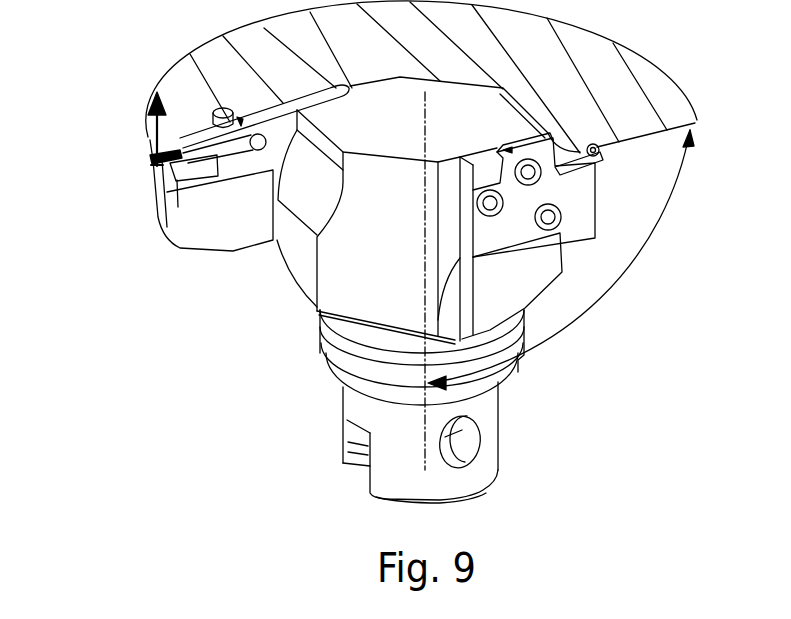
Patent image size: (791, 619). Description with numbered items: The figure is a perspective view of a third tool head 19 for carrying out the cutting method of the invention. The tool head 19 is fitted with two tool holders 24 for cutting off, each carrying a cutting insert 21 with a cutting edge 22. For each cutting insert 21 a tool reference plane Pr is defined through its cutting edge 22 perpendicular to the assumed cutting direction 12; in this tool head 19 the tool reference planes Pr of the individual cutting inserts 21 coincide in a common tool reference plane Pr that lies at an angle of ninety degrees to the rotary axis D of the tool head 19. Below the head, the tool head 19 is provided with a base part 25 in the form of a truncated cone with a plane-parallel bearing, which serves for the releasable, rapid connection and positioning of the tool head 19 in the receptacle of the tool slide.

The assumed cutting direction 12 is at (150, 99).
The tool head 19 is at (360, 267).
The cutting insert 21 is at (197, 173).
The cutting edge 22 is at (155, 166).
The tool holder 24 is at (235, 207).
The base part 25 is at (483, 415).
The tool reference plane Pr is at (186, 103).
The rotary axis D is at (424, 93).